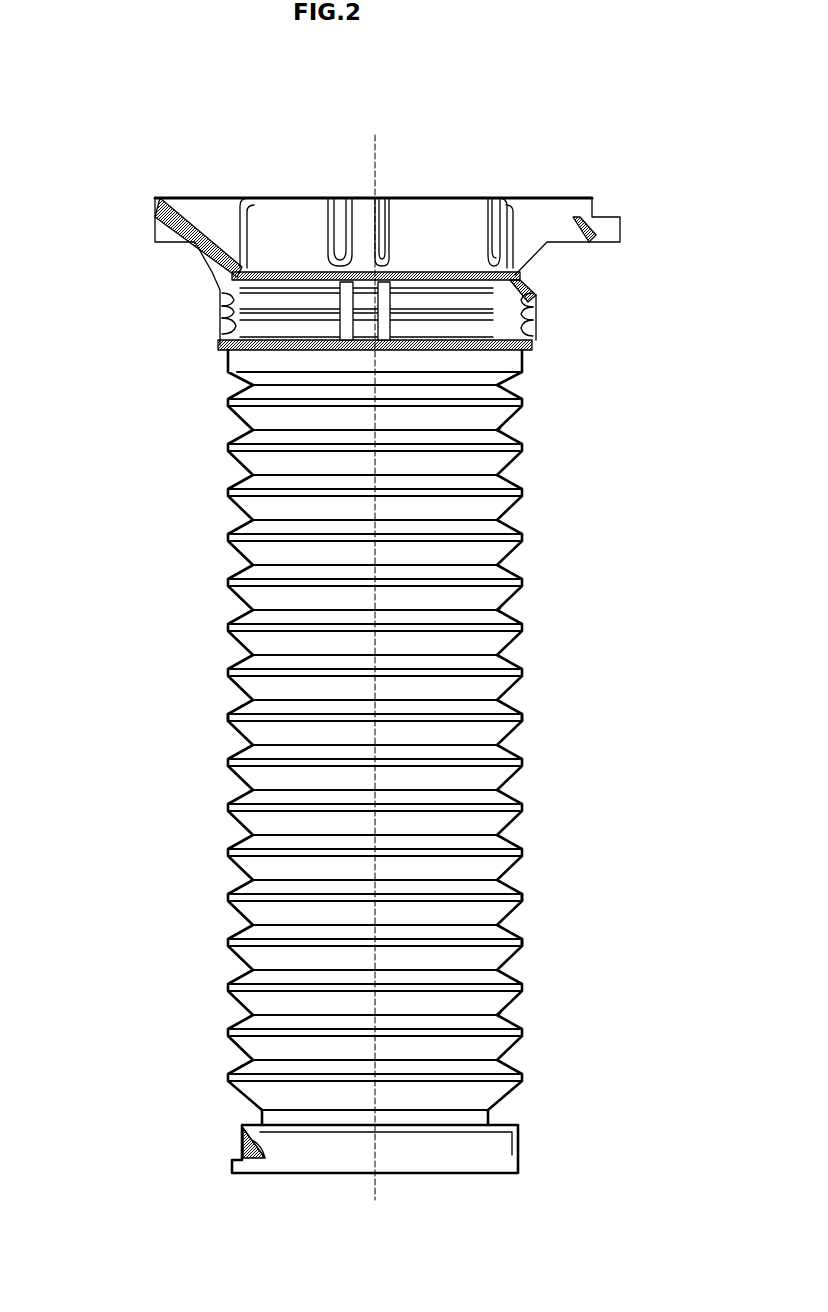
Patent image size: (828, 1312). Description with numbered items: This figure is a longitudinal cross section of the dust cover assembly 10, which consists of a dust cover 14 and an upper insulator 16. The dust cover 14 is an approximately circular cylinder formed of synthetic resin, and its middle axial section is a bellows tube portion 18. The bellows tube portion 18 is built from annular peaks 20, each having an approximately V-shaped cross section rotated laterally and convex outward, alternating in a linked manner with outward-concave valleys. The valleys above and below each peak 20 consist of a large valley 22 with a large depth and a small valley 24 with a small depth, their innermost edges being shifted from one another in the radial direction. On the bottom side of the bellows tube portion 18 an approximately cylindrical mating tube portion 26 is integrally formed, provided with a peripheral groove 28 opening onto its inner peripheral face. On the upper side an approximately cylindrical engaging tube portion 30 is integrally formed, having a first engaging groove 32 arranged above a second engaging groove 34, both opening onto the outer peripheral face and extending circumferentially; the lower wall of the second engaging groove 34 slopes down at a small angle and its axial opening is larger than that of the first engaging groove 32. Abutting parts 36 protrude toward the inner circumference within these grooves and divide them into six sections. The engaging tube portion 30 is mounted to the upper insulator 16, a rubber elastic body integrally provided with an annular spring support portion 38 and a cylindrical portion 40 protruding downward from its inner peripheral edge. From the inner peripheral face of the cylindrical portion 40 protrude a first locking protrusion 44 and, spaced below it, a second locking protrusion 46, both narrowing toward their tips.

The dust cover assembly 10 is at (582, 157).
The dust cover 14 is at (382, 737).
The upper insulator 16 is at (148, 222).
The bellows tube portion 18 is at (220, 628).
The peak 20 is at (522, 713).
The large valley 22 is at (499, 432).
The small valley 24 is at (507, 542).
The mating tube portion 26 is at (523, 1145).
The peripheral groove 28 is at (245, 1135).
The engaging tube portion 30 is at (527, 275).
The first engaging groove 32 is at (523, 298).
The second engaging groove 34 is at (525, 323).
The abutting part 36 is at (380, 302).
The spring support portion 38 is at (198, 220).
The cylindrical portion 40 is at (227, 308).
The first locking protrusion 44 is at (227, 298).
The second locking protrusion 46 is at (233, 317).